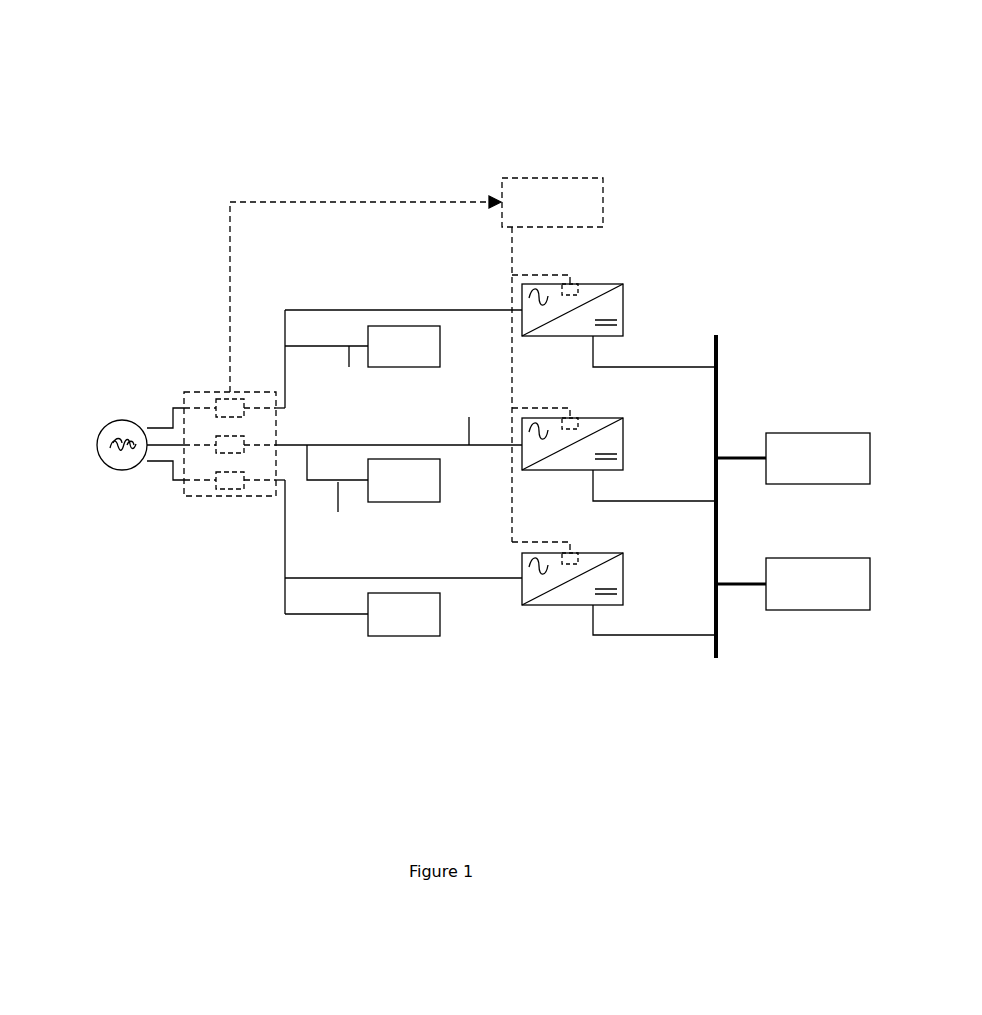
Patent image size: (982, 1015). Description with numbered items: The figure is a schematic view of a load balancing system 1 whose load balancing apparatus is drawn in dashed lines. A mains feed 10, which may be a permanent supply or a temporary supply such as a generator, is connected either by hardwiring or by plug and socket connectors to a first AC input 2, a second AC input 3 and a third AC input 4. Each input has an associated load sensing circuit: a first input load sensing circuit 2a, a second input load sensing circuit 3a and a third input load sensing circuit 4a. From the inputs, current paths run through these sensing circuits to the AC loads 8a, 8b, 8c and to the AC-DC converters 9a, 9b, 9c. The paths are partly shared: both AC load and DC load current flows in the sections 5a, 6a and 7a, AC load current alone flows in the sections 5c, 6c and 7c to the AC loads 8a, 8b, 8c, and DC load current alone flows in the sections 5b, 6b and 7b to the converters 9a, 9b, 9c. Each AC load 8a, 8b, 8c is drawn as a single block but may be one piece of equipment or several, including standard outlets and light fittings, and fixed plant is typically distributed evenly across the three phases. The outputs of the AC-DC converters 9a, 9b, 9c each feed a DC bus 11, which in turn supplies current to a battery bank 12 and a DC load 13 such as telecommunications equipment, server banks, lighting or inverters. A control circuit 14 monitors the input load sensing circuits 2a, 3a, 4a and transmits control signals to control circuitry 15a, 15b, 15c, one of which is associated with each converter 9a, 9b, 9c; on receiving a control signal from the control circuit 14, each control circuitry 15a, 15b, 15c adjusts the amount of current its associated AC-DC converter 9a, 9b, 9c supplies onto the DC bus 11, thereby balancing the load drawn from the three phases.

The load balancing system 1 is at (471, 136).
The first AC input 2 is at (182, 405).
The first input load sensing circuit 2a is at (223, 402).
The second AC input 3 is at (182, 443).
The second input load sensing circuit 3a is at (223, 455).
The third AC input 4 is at (182, 482).
The third input load sensing circuit 4a is at (230, 483).
The current path section 5a is at (288, 375).
The current path section 5b is at (383, 308).
The current path section 5c is at (327, 369).
The current path section 6a is at (288, 440).
The current path section 6b is at (472, 420).
The current path section 6c is at (337, 490).
The current path section 7a is at (288, 554).
The current path section 7b is at (403, 577).
The current path section 7c is at (340, 617).
The AC load 8a is at (404, 346).
The AC load 8b is at (404, 480).
The AC load 8c is at (404, 614).
The AC-DC converter 9a is at (605, 310).
The AC-DC converter 9b is at (612, 436).
The AC-DC converter 9c is at (612, 580).
The mains feed 10 is at (117, 452).
The DC bus 11 is at (718, 363).
The battery bank 12 is at (818, 584).
The DC load 13 is at (818, 458).
The control circuit 14 is at (416, 360).
The control circuitry 15a is at (570, 288).
The control circuitry 15b is at (572, 422).
The control circuitry 15c is at (572, 560).